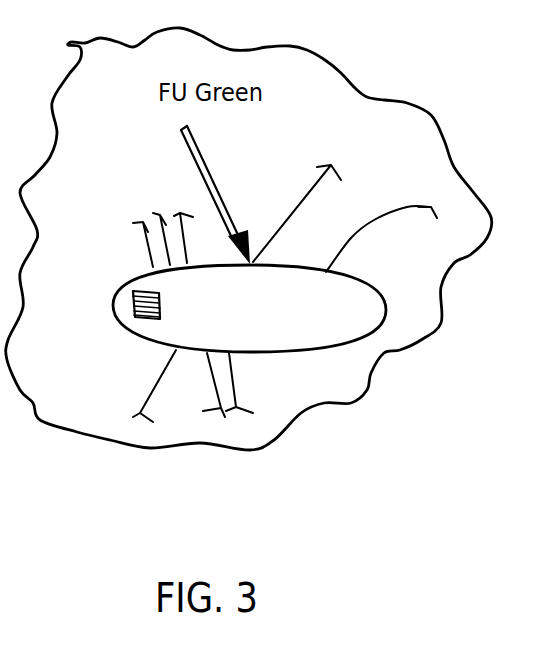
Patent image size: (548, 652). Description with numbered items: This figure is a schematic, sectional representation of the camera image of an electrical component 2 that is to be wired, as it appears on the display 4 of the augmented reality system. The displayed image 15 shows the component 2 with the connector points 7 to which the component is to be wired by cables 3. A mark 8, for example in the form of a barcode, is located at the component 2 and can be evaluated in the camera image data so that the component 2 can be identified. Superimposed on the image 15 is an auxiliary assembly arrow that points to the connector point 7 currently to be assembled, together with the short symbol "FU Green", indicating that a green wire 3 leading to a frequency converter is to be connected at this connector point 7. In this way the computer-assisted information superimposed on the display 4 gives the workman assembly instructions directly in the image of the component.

The electrical component 2 is at (314, 337).
The cable 3 is at (290, 215).
The display 4 is at (370, 96).
The connector point 7 is at (249, 265).
The mark 8 is at (130, 322).
The image 15 is at (404, 152).